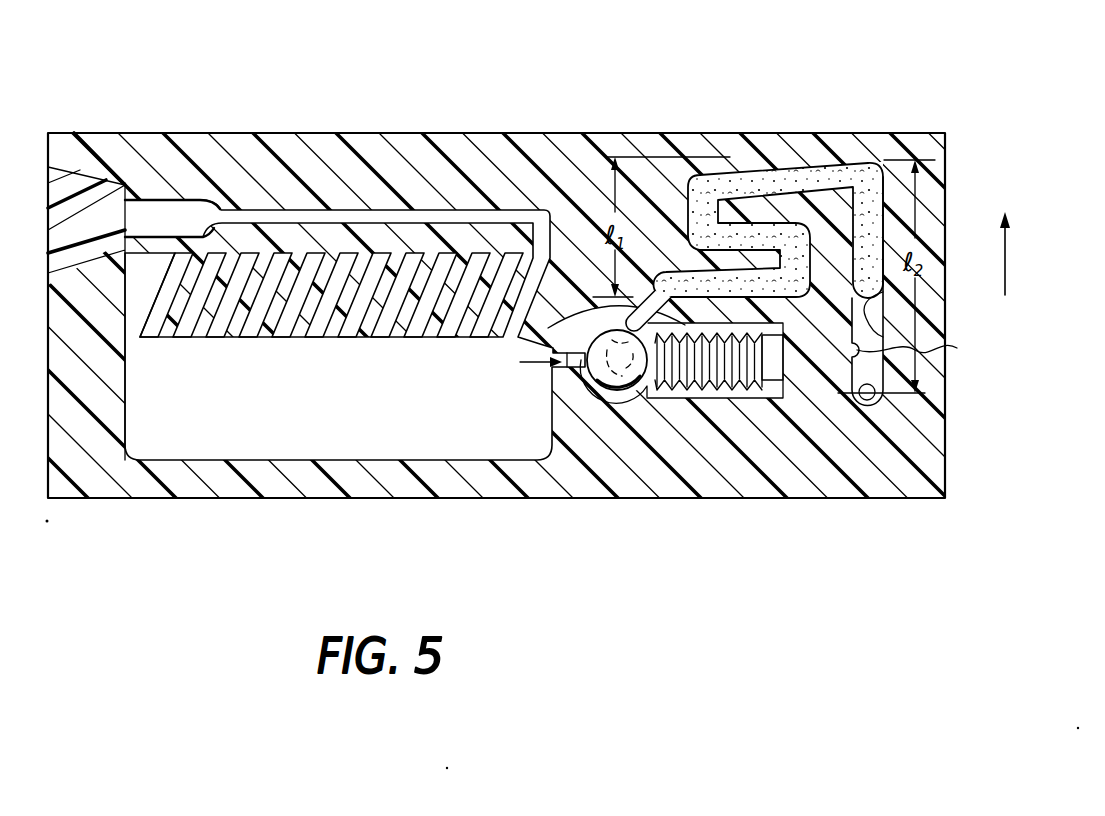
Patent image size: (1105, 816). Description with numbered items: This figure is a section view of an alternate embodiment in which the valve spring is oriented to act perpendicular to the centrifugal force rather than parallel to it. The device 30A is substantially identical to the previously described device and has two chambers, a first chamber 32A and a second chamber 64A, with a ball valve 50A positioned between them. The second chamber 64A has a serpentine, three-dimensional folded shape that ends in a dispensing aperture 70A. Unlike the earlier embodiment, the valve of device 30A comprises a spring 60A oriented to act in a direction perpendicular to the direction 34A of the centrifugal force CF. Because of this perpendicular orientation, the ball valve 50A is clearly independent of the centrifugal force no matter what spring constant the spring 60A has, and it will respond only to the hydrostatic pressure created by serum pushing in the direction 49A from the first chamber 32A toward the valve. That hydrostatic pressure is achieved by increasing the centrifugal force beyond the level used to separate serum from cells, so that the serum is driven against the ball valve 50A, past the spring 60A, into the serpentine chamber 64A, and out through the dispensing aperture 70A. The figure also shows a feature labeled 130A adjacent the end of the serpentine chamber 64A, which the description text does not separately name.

The device 30A is at (461, 114).
The chamber 32A is at (273, 401).
The direction of force CF 34A is at (1008, 255).
The direction of serum pushing 49A is at (548, 366).
The ball valve 50A is at (606, 405).
The spring 60A is at (754, 392).
The chamber 64A is at (776, 160).
The dispensing aperture 70A is at (884, 414).
The post slot 130A is at (923, 367).